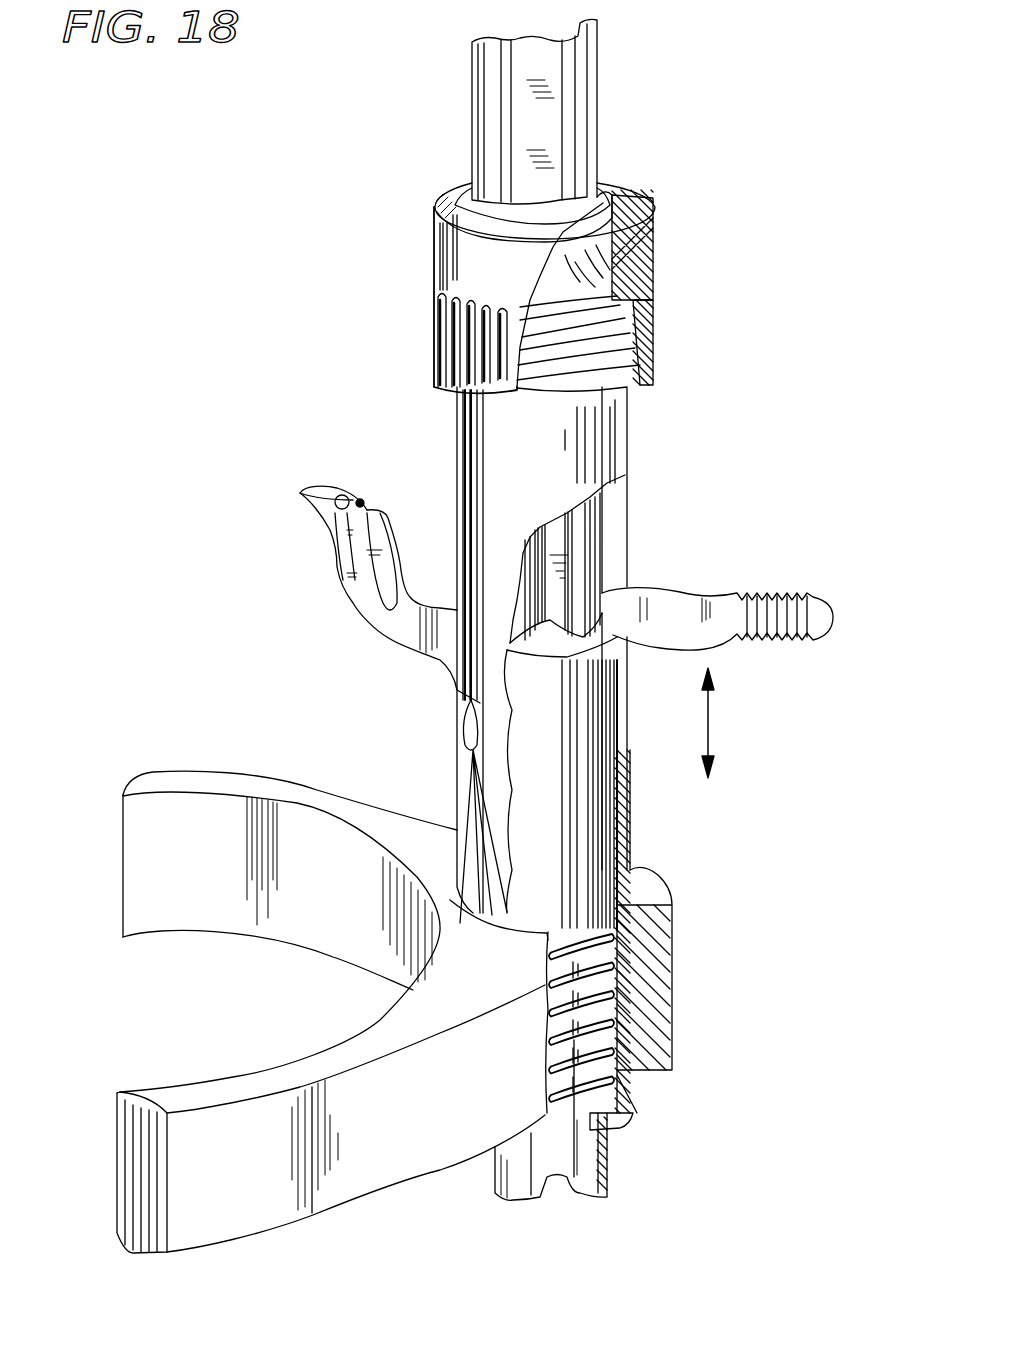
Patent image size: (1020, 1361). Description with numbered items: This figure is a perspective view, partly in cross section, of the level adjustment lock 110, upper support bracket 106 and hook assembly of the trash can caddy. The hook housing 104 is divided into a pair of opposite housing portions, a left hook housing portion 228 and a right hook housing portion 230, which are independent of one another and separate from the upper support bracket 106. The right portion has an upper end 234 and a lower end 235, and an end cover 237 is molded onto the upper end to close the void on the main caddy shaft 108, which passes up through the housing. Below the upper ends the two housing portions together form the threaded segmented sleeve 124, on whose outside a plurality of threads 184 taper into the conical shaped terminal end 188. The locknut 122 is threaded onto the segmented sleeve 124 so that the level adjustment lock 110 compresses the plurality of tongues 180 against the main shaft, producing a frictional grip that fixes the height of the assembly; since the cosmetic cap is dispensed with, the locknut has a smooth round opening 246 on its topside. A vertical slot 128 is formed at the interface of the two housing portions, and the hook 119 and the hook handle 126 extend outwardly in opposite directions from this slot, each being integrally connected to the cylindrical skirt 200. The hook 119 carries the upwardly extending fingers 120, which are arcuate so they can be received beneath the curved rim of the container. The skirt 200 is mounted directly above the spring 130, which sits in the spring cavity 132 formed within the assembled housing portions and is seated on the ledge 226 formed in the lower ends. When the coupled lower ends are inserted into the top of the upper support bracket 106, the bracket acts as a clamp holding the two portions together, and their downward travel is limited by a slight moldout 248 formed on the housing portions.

The hook housing 104 is at (705, 531).
The upper support bracket 106 is at (217, 765).
The main caddy shaft 108 is at (582, 60).
The level adjustment lock 110 is at (655, 275).
The hook 119 is at (413, 656).
The upwardly extending fingers 120 is at (303, 492).
The locknut 122 is at (440, 263).
The threaded segmented sleeve 124 is at (600, 315).
The hook handle 126 is at (772, 650).
The vertical slot 128 is at (467, 450).
The spring 130 is at (647, 980).
The spring cavity 132 is at (607, 1003).
The tongues 180 is at (605, 200).
The threads 184 is at (607, 360).
The conical shaped terminal end 188 is at (577, 239).
The cylindrical skirt 200 is at (590, 810).
The ledge 226 is at (613, 1083).
The left hook housing portion 228 is at (463, 760).
The right hook housing portion 230 is at (607, 452).
The upper end 234 is at (614, 187).
The lower end 235 is at (610, 1130).
The end cover 237 is at (533, 200).
The smooth round opening 246 is at (612, 193).
The moldout 248 is at (463, 902).